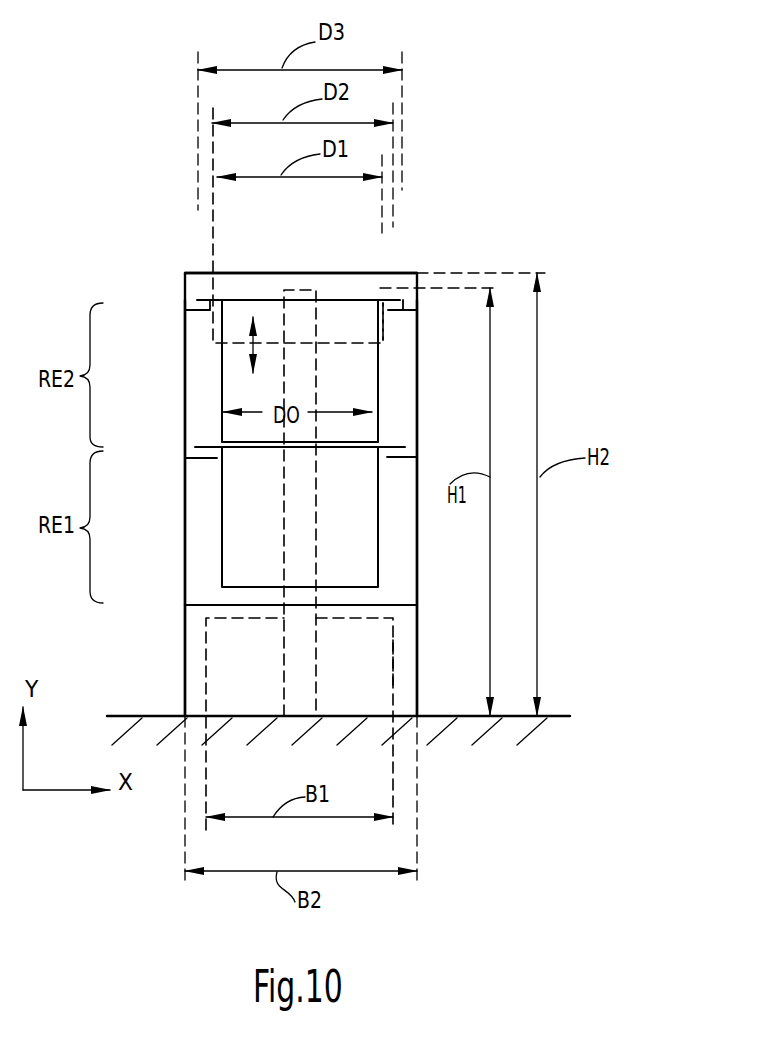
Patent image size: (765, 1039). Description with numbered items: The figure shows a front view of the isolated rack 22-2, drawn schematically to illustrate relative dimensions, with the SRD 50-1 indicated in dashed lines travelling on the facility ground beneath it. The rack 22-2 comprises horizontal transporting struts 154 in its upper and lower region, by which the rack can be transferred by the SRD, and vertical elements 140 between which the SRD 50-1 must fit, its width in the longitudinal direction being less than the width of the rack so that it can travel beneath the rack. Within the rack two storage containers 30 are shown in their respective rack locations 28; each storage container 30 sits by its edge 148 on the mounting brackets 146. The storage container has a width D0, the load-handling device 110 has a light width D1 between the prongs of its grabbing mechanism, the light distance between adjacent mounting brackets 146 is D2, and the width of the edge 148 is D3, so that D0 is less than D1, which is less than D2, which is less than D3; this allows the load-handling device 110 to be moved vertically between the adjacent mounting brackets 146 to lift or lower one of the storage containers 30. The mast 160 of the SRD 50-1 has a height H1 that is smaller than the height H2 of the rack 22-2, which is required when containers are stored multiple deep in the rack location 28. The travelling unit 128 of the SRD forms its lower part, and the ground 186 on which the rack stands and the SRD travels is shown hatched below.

The rack 22-2 is at (172, 258).
The transporting struts 154 is at (318, 272).
The rack location 28 is at (204, 403).
The storage container 30 is at (378, 398).
The mounting brackets 146 is at (403, 300).
The edge 148 is at (229, 300).
The load-handling device 110 is at (387, 327).
The mast 160 is at (318, 518).
The vertical elements 140 is at (185, 635).
The SRD 50-1 is at (252, 653).
The travelling unit 128 is at (394, 663).
The base surface 186 is at (557, 715).